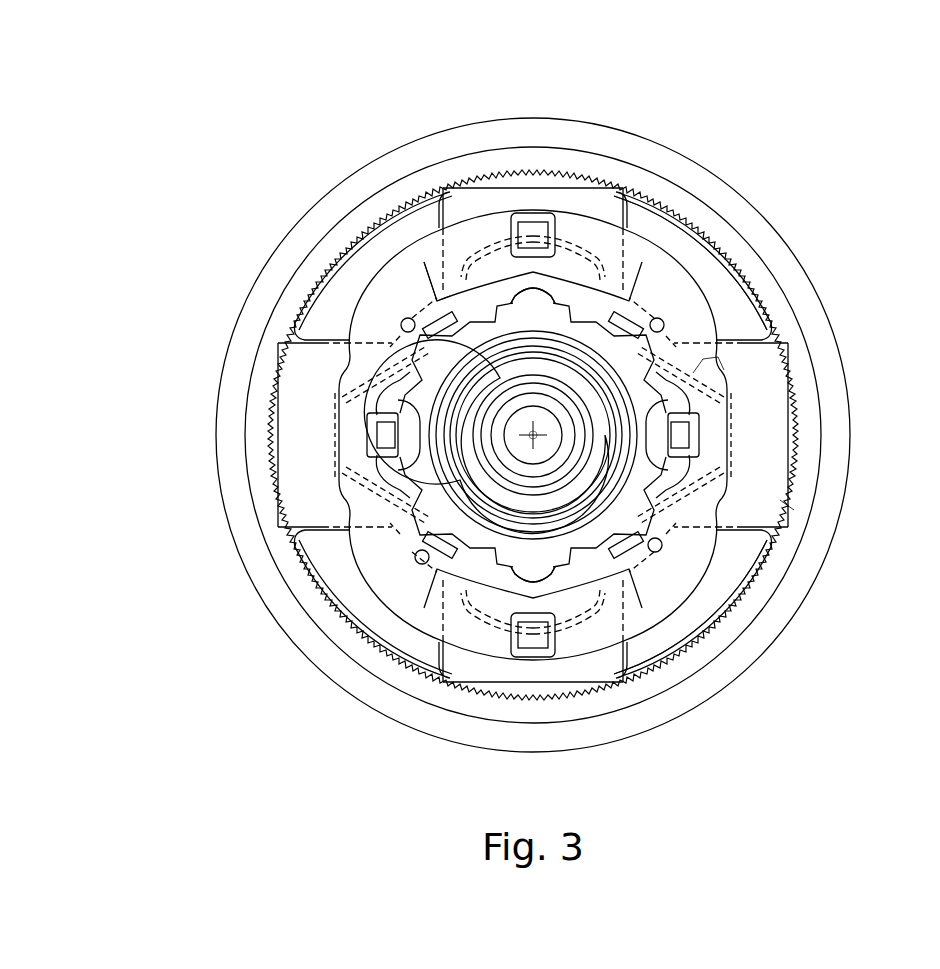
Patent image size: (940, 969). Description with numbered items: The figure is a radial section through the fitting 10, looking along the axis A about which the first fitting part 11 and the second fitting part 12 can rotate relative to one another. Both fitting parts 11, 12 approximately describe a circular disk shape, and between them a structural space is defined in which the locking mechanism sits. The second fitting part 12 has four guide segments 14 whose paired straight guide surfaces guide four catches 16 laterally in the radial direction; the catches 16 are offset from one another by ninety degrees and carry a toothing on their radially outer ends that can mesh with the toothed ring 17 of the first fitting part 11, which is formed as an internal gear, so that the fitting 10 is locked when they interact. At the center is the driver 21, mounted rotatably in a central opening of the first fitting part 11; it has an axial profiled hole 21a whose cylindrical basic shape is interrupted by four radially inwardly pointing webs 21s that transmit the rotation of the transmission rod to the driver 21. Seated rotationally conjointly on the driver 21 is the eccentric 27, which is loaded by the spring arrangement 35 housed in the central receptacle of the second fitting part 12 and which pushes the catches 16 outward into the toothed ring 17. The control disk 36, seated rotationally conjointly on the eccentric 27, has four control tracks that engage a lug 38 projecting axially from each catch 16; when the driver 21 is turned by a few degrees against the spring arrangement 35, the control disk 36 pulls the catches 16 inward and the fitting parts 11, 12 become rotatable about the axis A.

The fitting 10 is at (755, 148).
The first fitting part 11 is at (258, 343).
The second fitting part 12 is at (683, 153).
The guide segments 14 is at (332, 297).
The catches 16 is at (527, 200).
The toothed ring 17 is at (288, 530).
The driver 21 is at (505, 467).
The profiled hole 21a is at (700, 365).
The webs 21s is at (436, 298).
The eccentric 27 is at (302, 330).
The spring arrangement 35 is at (657, 553).
The control disk 36 is at (723, 563).
The lug 38 is at (524, 232).
The axis A is at (787, 505).